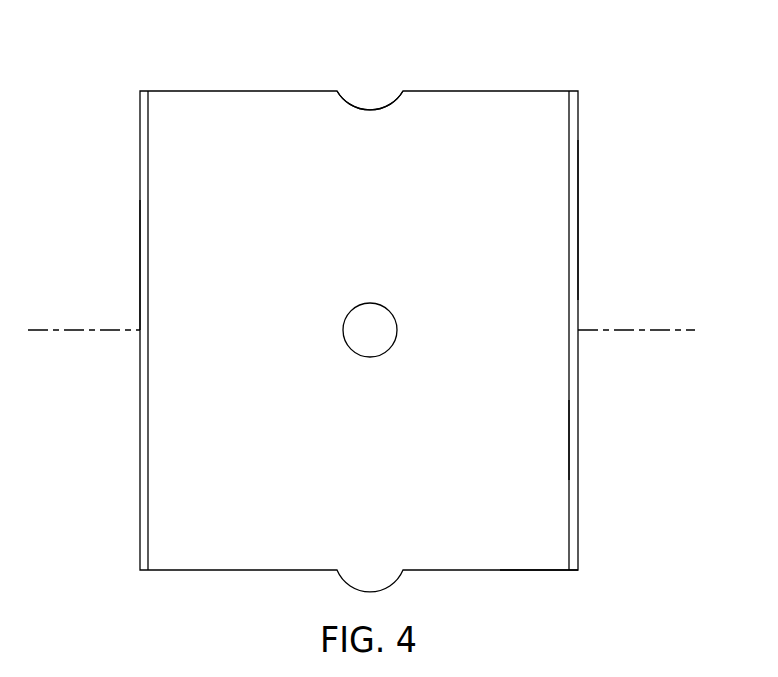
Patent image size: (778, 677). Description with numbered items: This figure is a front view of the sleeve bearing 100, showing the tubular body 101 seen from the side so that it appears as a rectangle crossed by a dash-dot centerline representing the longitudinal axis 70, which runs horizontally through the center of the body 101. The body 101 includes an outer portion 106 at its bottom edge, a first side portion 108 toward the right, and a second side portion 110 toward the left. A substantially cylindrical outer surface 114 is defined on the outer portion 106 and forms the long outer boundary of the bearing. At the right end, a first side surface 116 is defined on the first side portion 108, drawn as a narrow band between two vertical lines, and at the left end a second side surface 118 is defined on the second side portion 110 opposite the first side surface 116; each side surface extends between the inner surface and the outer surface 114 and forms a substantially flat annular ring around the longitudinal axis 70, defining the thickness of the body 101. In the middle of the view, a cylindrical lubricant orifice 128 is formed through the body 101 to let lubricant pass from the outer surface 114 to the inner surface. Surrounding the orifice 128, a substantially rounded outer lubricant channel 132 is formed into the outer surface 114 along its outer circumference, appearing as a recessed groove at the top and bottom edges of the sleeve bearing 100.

The sleeve bearing 100 is at (565, 53).
The tubular body 101 is at (175, 480).
The outer portion 106 is at (547, 578).
The first side portion 108 is at (625, 220).
The second side portion 110 is at (95, 275).
The outer surface 114 is at (532, 440).
The first side surface 116 is at (580, 145).
The second side surface 118 is at (147, 182).
The lubricant orifice 128 is at (367, 320).
The outer lubricant channel 132 is at (362, 117).
The longitudinal axis 70 is at (100, 334).